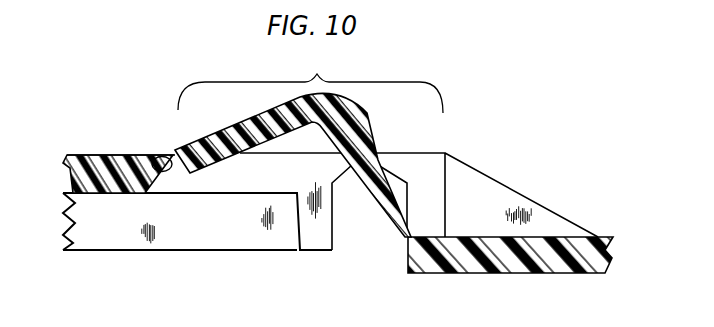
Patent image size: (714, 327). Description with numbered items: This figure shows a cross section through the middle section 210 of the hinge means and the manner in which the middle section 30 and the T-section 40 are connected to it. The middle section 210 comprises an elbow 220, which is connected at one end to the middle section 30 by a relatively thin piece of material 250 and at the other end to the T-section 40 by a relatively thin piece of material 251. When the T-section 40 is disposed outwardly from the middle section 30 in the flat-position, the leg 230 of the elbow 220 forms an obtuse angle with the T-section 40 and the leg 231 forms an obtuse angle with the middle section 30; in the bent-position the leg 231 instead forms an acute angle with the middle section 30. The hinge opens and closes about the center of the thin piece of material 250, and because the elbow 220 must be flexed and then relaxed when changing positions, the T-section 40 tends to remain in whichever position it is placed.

The middle section 30 is at (558, 263).
The T-section 40 is at (103, 160).
The middle section of hinge means 210 is at (377, 80).
The elbow 220 is at (357, 129).
The leg of elbow 230 is at (226, 146).
The leg of elbow 231 is at (384, 204).
The relatively thin piece of material 250 is at (405, 247).
The relatively thin piece of material 251 is at (154, 158).